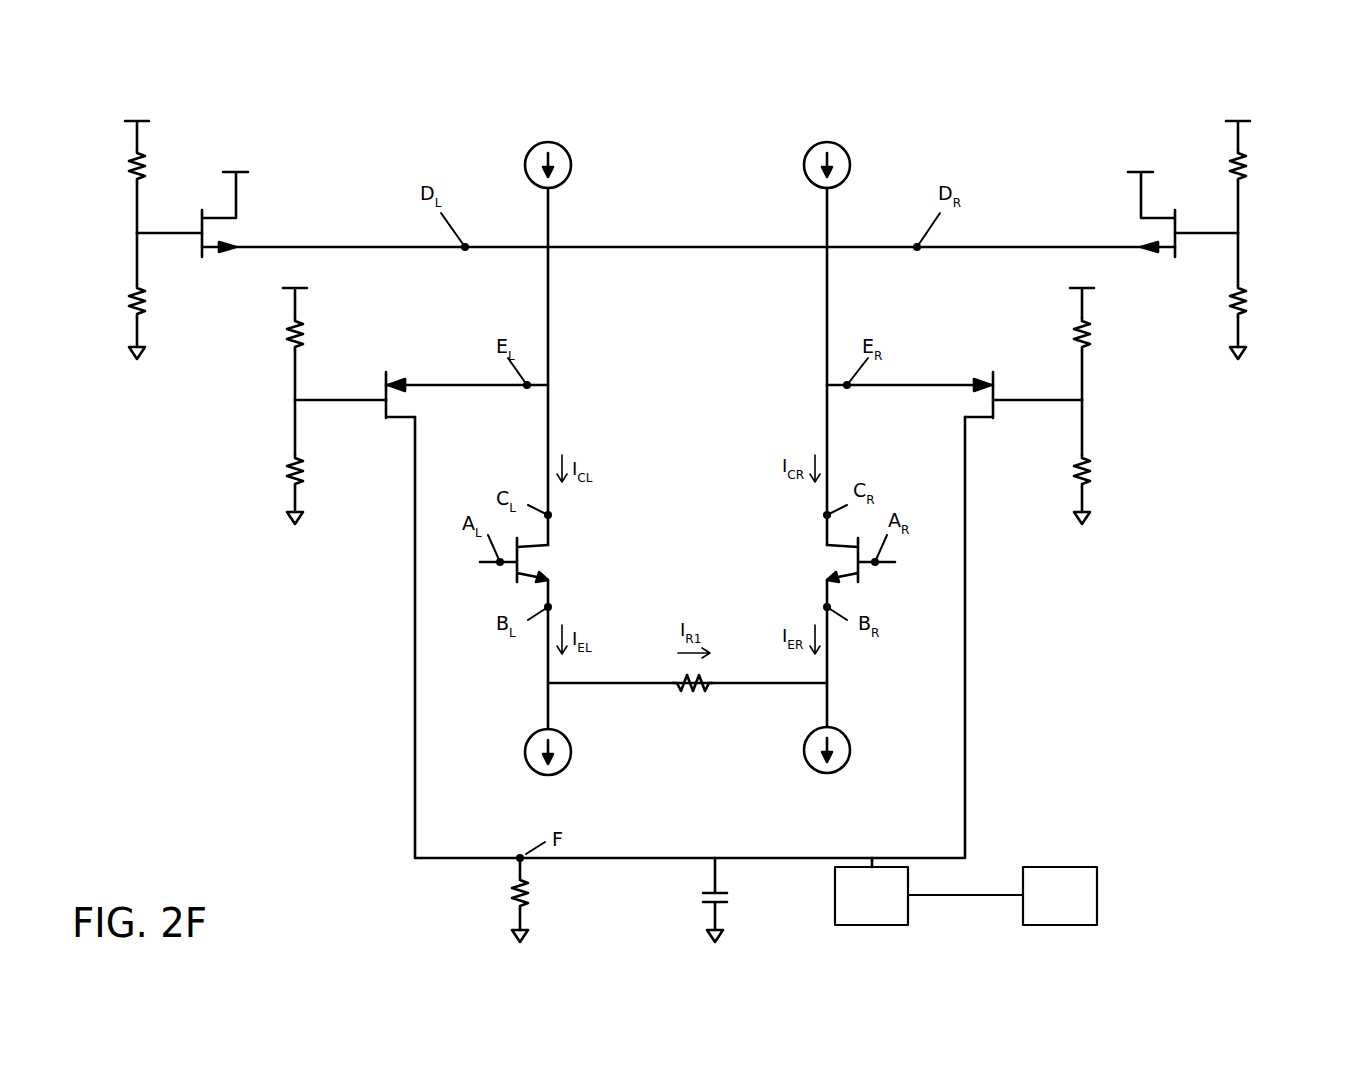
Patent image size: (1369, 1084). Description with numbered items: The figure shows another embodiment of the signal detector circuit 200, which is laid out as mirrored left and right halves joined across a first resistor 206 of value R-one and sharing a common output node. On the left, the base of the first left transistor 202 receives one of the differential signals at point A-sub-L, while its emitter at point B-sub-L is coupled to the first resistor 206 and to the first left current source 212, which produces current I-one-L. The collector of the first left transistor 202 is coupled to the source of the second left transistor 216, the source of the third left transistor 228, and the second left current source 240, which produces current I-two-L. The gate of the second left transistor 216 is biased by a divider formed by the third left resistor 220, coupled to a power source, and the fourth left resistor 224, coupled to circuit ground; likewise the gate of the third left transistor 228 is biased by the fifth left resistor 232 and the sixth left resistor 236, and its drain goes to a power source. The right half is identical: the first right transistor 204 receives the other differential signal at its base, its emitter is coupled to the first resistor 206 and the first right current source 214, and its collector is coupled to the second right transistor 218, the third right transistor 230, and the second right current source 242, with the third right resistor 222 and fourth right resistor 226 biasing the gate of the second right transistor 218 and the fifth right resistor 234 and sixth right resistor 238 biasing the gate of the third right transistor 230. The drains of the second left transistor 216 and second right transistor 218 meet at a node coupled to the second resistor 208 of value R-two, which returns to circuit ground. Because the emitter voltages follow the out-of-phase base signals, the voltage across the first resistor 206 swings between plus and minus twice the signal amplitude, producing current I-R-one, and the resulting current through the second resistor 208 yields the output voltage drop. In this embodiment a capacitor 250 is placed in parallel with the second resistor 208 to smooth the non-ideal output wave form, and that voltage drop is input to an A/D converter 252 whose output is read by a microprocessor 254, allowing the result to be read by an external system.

The signal detector circuit 200 is at (1180, 755).
The first left transistor 202 is at (556, 558).
The first right transistor 204 is at (819, 558).
The first resistor 206 is at (668, 698).
The second resistor 208 is at (498, 890).
The first left current source 212 is at (545, 783).
The first right current source 214 is at (830, 782).
The second left transistor 216 is at (400, 372).
The second right transistor 218 is at (985, 372).
The third left resistor 220 is at (270, 330).
The third right resistor 222 is at (1107, 327).
The fourth left resistor 224 is at (268, 460).
The fourth right resistor 226 is at (1107, 455).
The third left transistor 228 is at (260, 208).
The third right transistor 230 is at (1115, 208).
The fifth left resistor 232 is at (112, 162).
The fifth right resistor 234 is at (1258, 165).
The sixth left resistor 236 is at (112, 300).
The sixth right resistor 238 is at (1258, 292).
The second left current source 240 is at (570, 153).
The second right current source 242 is at (805, 153).
The capacitor 250 is at (690, 890).
The A/D converter 252 is at (929, 891).
The microprocessor 254 is at (1060, 896).